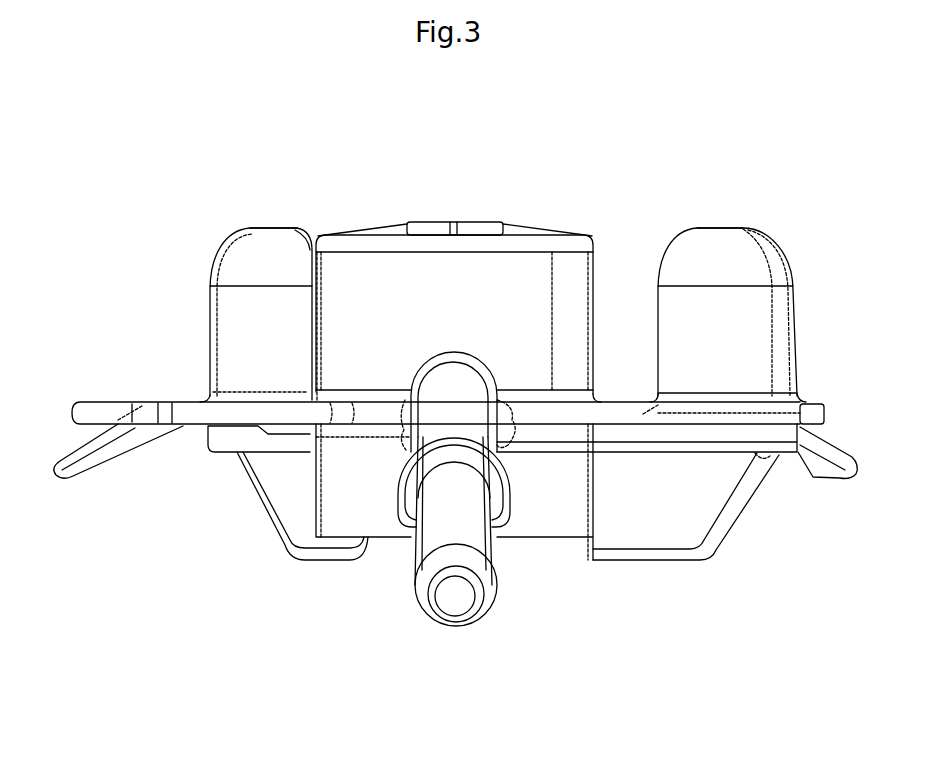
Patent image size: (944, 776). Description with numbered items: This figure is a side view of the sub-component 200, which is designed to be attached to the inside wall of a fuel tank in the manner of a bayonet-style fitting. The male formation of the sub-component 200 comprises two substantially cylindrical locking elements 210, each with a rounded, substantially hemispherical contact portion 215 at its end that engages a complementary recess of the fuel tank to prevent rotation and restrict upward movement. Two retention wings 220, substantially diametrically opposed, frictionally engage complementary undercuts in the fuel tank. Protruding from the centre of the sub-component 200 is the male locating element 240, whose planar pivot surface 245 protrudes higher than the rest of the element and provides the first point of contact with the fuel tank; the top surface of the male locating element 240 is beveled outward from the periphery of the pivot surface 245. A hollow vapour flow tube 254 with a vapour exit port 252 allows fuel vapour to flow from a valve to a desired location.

The sub-component 200 is at (262, 166).
The locking element 210 is at (226, 330).
The contact portion 215 is at (236, 257).
The retention wing 220 is at (103, 438).
The male locating element 240 is at (560, 278).
The pivot surface 245 is at (472, 222).
The vapour exit port 252 is at (452, 604).
The hollow vapour flow tube 254 is at (476, 542).